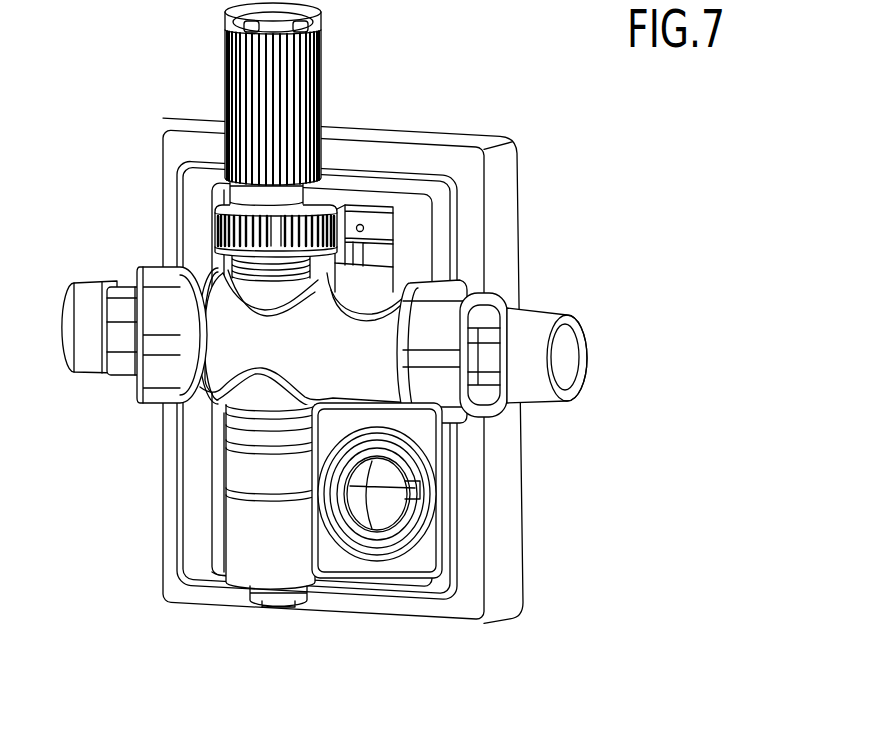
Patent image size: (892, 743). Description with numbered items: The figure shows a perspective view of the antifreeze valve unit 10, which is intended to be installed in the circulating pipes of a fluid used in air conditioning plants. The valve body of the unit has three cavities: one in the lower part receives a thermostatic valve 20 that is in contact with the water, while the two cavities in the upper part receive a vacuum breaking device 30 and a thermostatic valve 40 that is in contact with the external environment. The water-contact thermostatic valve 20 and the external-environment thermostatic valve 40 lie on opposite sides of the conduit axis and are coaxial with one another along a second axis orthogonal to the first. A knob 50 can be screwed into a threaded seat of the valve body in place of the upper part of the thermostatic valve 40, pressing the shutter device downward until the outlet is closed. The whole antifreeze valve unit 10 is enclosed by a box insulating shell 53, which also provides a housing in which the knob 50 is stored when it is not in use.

The antifreeze valve unit 10 is at (706, 175).
The thermostatic valve in contact with the water 20 is at (213, 540).
The vacuum breaking device 30 is at (377, 193).
The thermostatic valve in contact with the external environment 40 is at (328, 80).
The knob 50 is at (442, 510).
The box insulating shell 53 is at (472, 577).